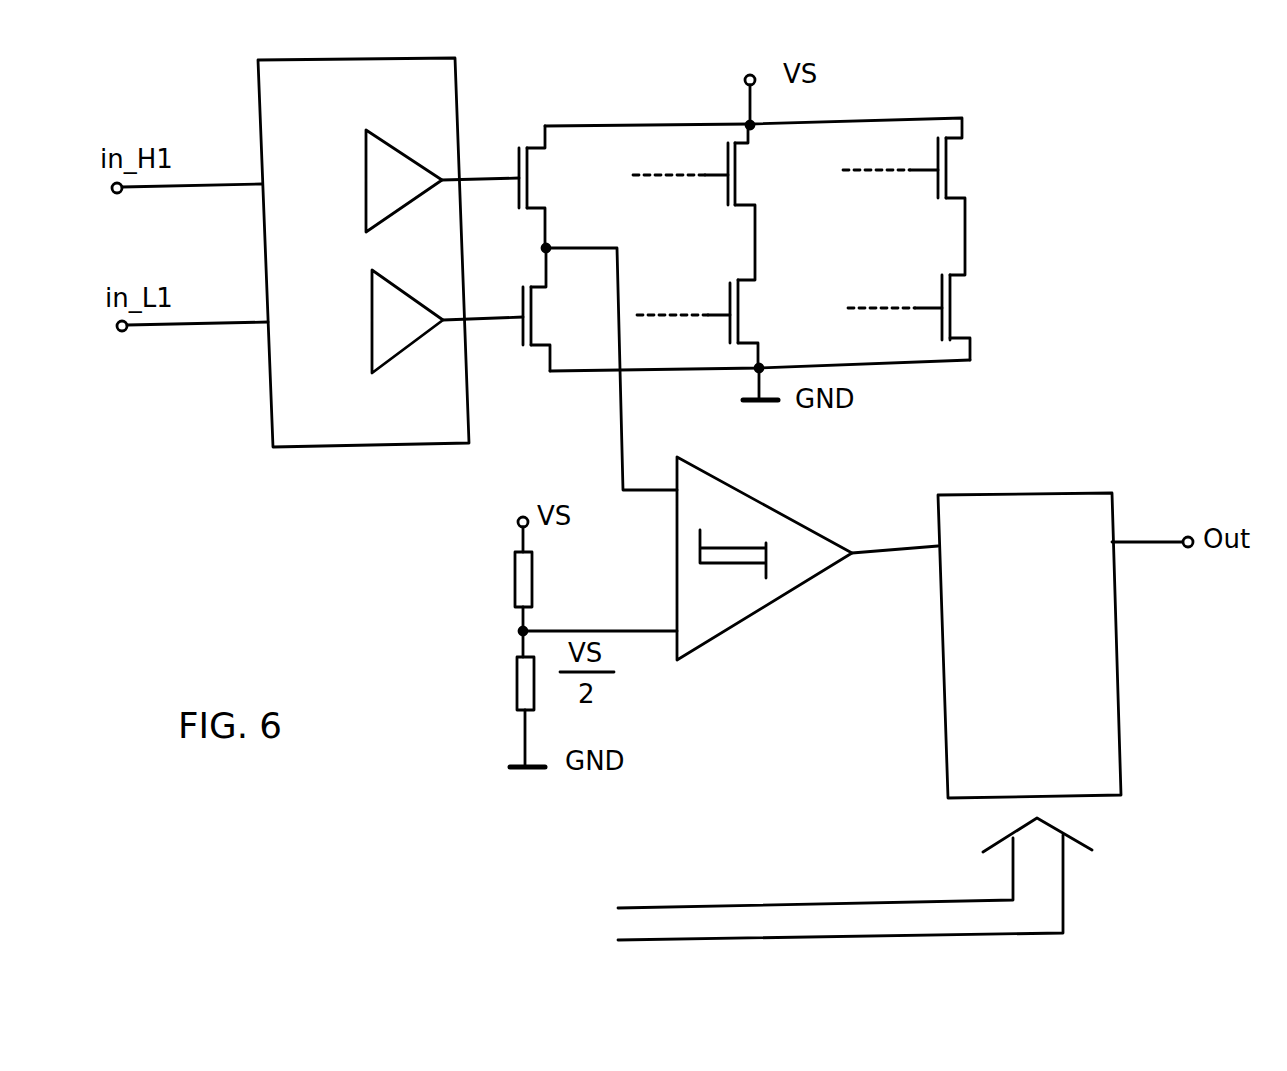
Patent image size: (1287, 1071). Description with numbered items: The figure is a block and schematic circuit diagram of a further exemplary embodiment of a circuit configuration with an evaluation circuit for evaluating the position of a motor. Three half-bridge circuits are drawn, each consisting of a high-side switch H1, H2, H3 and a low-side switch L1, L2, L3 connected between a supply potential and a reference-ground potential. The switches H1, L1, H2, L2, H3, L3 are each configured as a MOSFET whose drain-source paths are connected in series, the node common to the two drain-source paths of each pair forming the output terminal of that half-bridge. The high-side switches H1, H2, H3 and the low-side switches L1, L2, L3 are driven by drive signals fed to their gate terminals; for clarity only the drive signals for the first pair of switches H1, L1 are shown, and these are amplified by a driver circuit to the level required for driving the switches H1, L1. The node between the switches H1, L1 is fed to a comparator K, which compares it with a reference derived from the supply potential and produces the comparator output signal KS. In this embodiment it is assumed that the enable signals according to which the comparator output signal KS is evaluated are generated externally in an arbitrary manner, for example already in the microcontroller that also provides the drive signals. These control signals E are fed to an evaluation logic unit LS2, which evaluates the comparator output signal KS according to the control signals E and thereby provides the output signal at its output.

The high-side switch H1 is at (493, 187).
The low-side switch L1 is at (496, 309).
The high-side switch H2 is at (694, 202).
The low-side switch L2 is at (697, 324).
The high-side switch H3 is at (904, 201).
The low-side switch L3 is at (909, 317).
The comparator K is at (764, 556).
The comparator output signal KS is at (895, 527).
The evaluation logic unit LS2 is at (1082, 480).
The control signals E is at (855, 879).